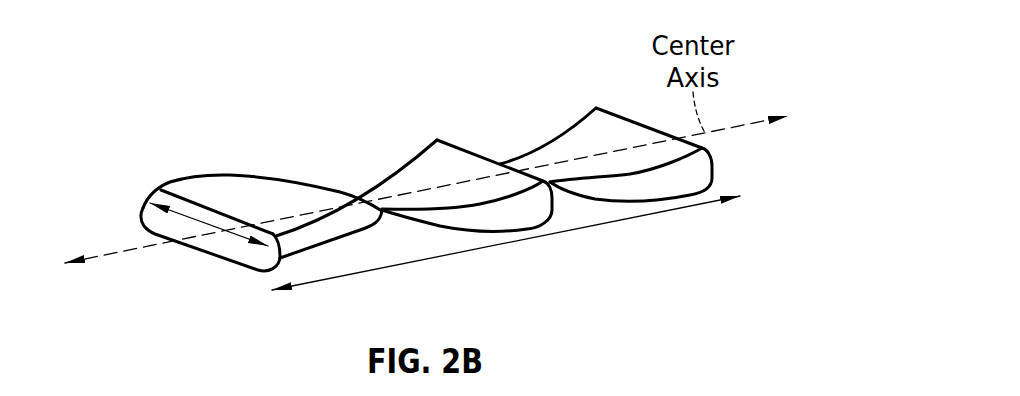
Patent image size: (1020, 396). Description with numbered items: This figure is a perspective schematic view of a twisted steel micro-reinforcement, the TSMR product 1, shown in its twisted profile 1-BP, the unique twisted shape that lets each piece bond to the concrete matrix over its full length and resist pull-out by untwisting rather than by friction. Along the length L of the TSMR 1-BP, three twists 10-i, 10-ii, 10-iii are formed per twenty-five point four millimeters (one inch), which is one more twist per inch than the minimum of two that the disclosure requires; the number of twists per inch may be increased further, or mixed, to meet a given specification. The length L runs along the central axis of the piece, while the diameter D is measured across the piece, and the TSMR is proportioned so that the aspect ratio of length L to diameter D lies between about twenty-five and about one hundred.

The TSMR product 1 is at (188, 70).
The twisted profile 1-BP is at (728, 172).
The first twist 10-i is at (223, 198).
The second twist 10-ii is at (392, 190).
The third twist 10-iii is at (558, 150).
The diameter D is at (240, 240).
The length L is at (415, 259).